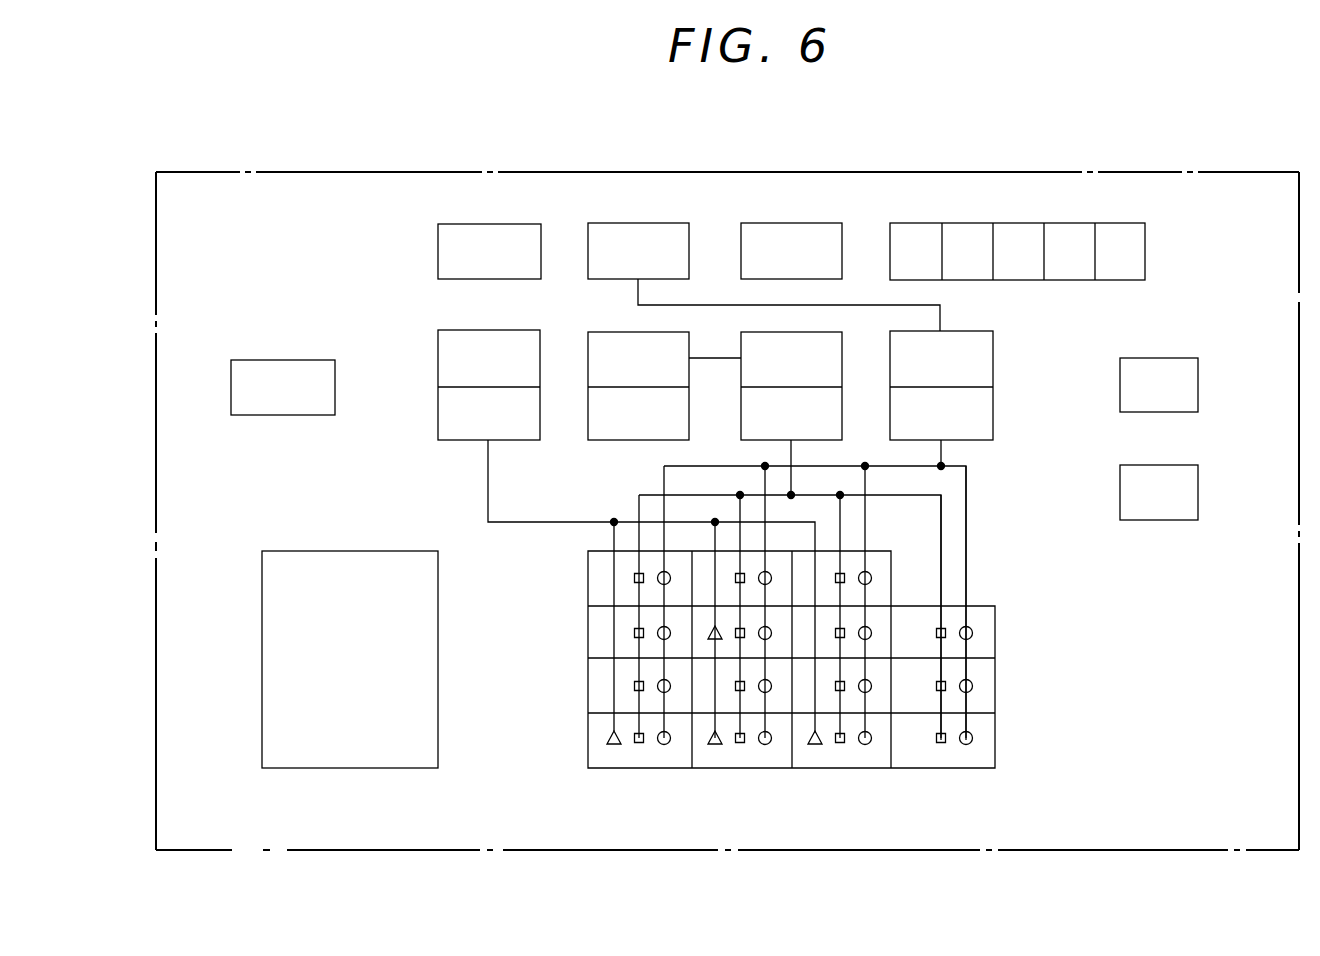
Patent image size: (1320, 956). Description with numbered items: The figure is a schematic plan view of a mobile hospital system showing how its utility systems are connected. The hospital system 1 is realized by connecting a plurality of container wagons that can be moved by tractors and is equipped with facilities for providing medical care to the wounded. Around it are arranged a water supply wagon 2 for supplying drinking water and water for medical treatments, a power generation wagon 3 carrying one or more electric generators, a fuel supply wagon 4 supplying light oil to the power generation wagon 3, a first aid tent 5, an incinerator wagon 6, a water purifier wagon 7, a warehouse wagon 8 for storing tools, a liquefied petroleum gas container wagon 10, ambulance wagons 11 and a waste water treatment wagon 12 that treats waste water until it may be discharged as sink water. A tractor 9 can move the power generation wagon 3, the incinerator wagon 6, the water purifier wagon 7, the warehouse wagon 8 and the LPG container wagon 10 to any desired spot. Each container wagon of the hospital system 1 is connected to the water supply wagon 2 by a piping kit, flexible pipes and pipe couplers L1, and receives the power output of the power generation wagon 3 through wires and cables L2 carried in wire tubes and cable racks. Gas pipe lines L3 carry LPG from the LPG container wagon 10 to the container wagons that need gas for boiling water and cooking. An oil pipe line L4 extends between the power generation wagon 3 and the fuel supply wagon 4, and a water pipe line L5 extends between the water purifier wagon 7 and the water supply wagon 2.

The hospital system 1 is at (998, 641).
The water supply wagon 2 is at (997, 345).
The power generation wagon 3 is at (838, 345).
The fuel supply wagon 4 is at (690, 334).
The first aid tent 5 is at (441, 627).
The incinerator wagon 6 is at (786, 224).
The water purifier wagon 7 is at (633, 224).
The warehouse wagon 8 is at (287, 360).
The tractor 9 is at (1145, 216).
The liquefied petroleum gas container wagon 10 is at (506, 331).
The ambulance wagons 11 is at (1198, 400).
The waste water treatment wagon 12 is at (478, 223).
The piping kit, flexible pipes and pipe couplers L1 is at (968, 492).
The wires and cables L2 is at (943, 548).
The gas pipe lines L3 is at (612, 540).
The oil pipe line L4 is at (712, 362).
The water pipe line L5 is at (703, 305).